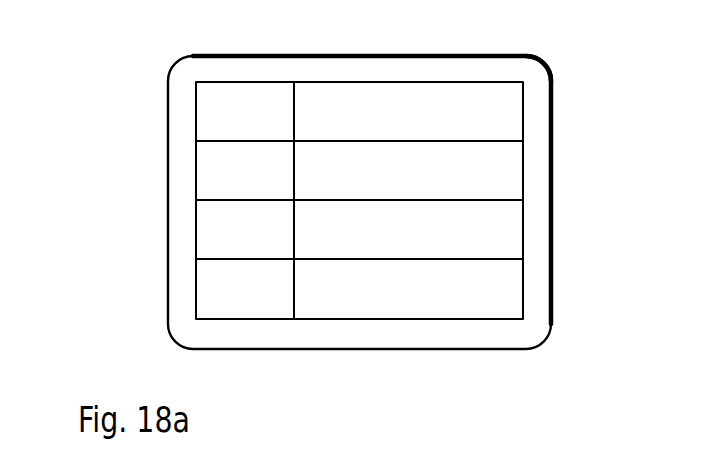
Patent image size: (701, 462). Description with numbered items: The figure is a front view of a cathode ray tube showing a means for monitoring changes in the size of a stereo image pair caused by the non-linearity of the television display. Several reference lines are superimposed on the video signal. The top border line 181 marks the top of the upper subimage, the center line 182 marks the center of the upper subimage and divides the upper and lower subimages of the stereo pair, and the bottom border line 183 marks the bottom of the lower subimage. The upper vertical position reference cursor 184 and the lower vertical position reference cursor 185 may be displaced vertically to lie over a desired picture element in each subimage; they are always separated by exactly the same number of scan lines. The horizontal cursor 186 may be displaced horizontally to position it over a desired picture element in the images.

The top border line 181 is at (178, 68).
The center line 182 is at (197, 200).
The bottom border line 183 is at (197, 318).
The upper vertical position reference cursor 184 is at (197, 139).
The lower vertical position reference cursor 185 is at (197, 258).
The horizontal cursor 186 is at (295, 105).